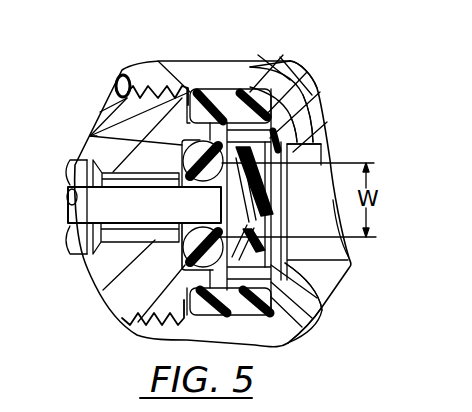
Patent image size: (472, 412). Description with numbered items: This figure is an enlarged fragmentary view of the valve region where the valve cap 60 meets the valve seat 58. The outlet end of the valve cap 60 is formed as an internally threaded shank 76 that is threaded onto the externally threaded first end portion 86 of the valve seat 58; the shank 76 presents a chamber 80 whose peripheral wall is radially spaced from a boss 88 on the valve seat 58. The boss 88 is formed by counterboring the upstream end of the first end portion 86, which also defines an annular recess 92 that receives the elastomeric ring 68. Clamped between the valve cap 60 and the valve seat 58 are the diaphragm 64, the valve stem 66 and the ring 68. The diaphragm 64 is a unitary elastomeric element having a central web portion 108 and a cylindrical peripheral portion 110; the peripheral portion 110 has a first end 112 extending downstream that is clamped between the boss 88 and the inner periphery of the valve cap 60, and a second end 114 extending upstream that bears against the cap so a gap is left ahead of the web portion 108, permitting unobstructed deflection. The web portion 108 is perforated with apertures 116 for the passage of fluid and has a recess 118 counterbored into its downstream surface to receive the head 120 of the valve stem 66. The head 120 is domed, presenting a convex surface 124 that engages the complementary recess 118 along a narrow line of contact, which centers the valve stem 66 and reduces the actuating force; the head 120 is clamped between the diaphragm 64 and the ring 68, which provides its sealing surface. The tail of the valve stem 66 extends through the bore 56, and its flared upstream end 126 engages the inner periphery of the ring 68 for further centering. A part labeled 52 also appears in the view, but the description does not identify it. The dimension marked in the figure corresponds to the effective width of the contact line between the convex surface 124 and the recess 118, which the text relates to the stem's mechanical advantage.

The housing flange 52 is at (351, 262).
The bore 56 is at (83, 251).
The valve seat 58 is at (123, 113).
The valve cap 60 is at (271, 68).
The diaphragm 64 is at (319, 129).
The valve stem 66 is at (70, 190).
The ring 68 is at (185, 273).
The internally threaded shank 76 is at (145, 86).
The chamber 80 is at (205, 90).
The externally threaded first end portion 86 is at (118, 74).
The boss 88 is at (290, 343).
The annular recess 92 is at (185, 264).
The central web portion 108 is at (332, 291).
The cylindrical peripheral portion 110 is at (241, 86).
The first end 112 is at (184, 88).
The second end 114 is at (305, 63).
The apertures 116 is at (313, 83).
The recess 118 is at (317, 111).
The head 120 is at (250, 196).
The convex surface 124 is at (262, 220).
The upstream end 126 is at (90, 136).